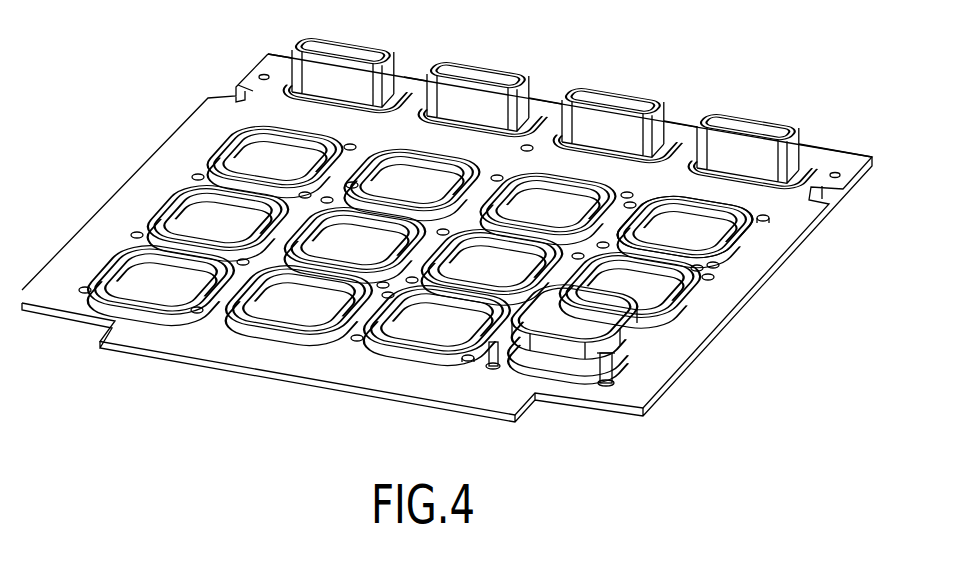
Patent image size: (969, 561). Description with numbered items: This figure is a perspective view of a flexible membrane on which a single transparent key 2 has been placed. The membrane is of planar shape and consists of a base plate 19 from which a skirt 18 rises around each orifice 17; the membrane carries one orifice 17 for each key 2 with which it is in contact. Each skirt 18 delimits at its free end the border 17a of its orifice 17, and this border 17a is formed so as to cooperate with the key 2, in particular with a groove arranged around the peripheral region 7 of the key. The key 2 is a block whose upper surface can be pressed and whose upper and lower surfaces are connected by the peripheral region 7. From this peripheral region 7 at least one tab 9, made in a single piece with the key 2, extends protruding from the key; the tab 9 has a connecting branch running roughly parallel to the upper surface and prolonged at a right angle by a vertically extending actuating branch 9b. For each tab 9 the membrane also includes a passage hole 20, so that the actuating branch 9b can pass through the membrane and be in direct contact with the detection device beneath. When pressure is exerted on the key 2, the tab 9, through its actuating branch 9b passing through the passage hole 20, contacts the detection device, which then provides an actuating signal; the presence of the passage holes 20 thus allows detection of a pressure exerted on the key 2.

The key 2 is at (637, 343).
The peripheral region 7 is at (552, 347).
The tab 9 is at (608, 385).
The actuating branch 9b is at (466, 362).
The orifice 17 is at (692, 227).
The border 17a is at (780, 178).
The skirt 18 is at (753, 243).
The base plate 19 is at (693, 328).
The passage hole 20 is at (770, 222).